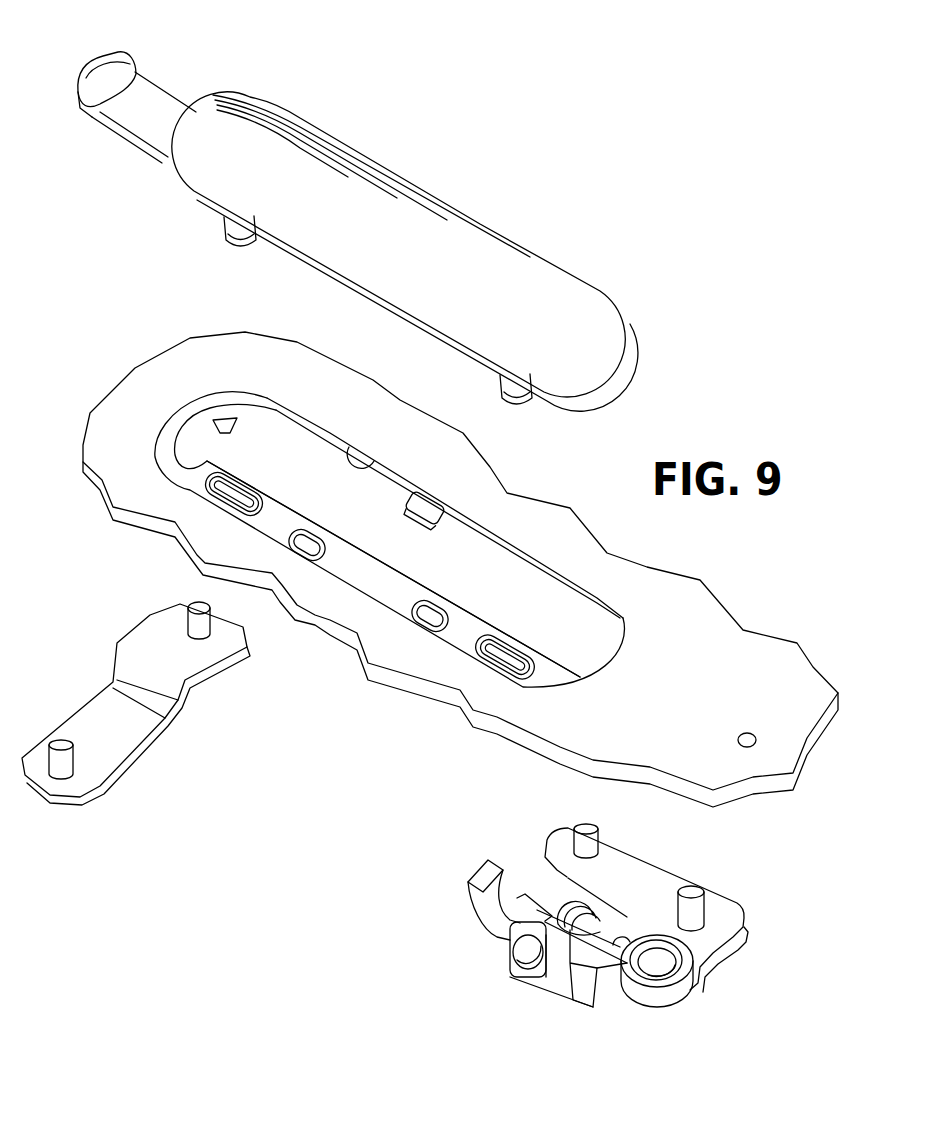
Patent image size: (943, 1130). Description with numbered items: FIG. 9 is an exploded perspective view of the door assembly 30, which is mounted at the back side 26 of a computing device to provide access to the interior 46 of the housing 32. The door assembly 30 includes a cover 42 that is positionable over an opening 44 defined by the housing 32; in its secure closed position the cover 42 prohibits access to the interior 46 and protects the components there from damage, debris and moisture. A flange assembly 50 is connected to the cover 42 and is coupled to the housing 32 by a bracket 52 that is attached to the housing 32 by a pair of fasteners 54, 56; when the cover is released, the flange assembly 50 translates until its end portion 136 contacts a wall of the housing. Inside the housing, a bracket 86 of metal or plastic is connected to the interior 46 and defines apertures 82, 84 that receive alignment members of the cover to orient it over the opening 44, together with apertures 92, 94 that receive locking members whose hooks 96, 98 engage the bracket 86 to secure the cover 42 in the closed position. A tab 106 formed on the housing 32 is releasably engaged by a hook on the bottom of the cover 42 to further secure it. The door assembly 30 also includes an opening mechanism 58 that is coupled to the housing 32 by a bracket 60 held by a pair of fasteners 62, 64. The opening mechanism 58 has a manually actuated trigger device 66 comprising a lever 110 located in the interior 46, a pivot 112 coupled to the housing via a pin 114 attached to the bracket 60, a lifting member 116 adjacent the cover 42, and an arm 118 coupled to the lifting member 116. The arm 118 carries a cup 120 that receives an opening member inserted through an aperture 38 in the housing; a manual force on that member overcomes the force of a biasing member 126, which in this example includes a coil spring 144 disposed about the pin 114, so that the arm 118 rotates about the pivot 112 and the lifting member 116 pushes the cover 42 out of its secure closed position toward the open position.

The door assembly 30 is at (700, 157).
The back side 26 is at (168, 368).
The housing 32 is at (767, 642).
The aperture 38 is at (748, 733).
The cover 42 is at (465, 238).
The opening 44 is at (372, 462).
The interior 46 is at (520, 578).
The flange assembly 50 is at (168, 92).
The bracket 52 is at (165, 732).
The fastener 54 is at (185, 613).
The fastener 56 is at (45, 743).
The opening mechanism 58 is at (497, 838).
The bracket 60 is at (650, 873).
The fastener 62 is at (575, 830).
The fastener 64 is at (705, 895).
The manually actuated trigger device 66 is at (570, 950).
The aperture 82 is at (312, 535).
The aperture 84 is at (432, 610).
The bracket 86 is at (476, 625).
The aperture 92 is at (243, 488).
The aperture 94 is at (513, 650).
The hook 96 is at (504, 393).
The hook 98 is at (232, 243).
The tab 106 is at (418, 517).
The lever 110 is at (588, 978).
The pivot 112 is at (550, 905).
The pin 114 is at (530, 960).
The lifting member 116 is at (468, 897).
The arm 118 is at (605, 985).
The cup 120 is at (665, 975).
The biasing member 126 is at (598, 913).
The end portion 136 is at (82, 73).
The coil spring 144 is at (603, 896).